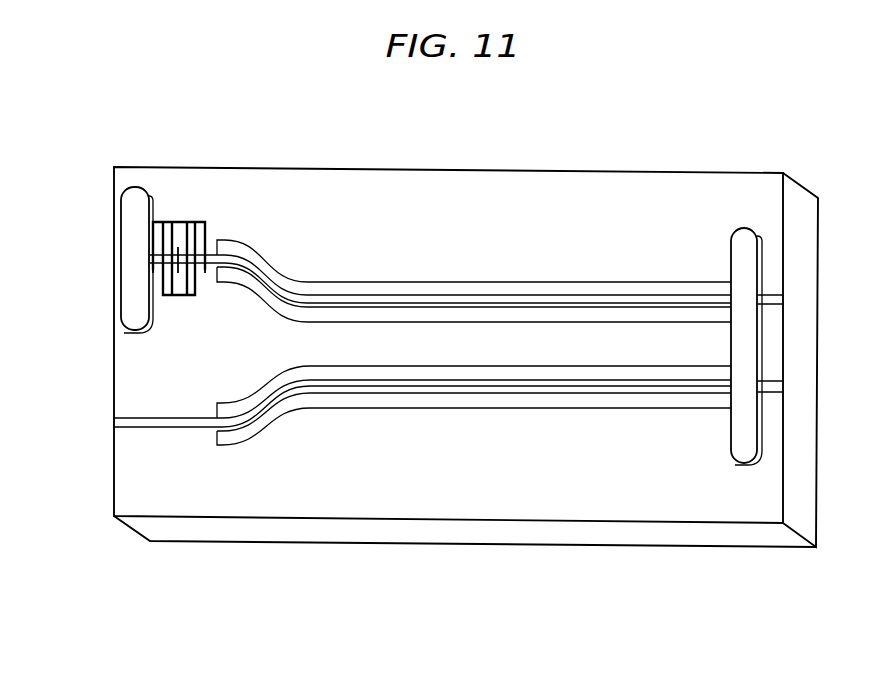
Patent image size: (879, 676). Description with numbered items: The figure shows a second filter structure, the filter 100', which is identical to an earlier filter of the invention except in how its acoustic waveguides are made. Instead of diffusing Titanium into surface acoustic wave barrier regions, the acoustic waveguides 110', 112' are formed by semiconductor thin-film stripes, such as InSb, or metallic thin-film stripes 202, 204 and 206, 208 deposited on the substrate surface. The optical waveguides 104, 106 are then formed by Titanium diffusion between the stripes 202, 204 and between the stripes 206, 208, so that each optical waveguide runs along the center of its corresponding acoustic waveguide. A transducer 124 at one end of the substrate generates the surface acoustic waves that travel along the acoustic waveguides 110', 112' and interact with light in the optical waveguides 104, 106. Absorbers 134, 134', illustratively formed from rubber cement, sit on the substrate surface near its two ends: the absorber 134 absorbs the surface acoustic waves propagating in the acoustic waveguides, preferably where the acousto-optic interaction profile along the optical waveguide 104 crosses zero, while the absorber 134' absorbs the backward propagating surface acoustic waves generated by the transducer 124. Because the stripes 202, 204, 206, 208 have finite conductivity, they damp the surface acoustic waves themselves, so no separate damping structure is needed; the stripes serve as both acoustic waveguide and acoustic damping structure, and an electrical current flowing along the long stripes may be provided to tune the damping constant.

The filter 100' is at (476, 316).
The optical waveguide 104 is at (153, 430).
The optical waveguide 106 is at (428, 295).
The acoustic waveguide 110' is at (474, 193).
The acoustic waveguide 112' is at (474, 515).
The transducer 124 is at (182, 222).
The absorber 134 is at (752, 412).
The absorber 134' is at (91, 260).
The thin-film stripe 202 is at (621, 284).
The thin-film stripe 204 is at (541, 318).
The thin-film stripe 206 is at (433, 373).
The thin-film stripe 208 is at (532, 407).